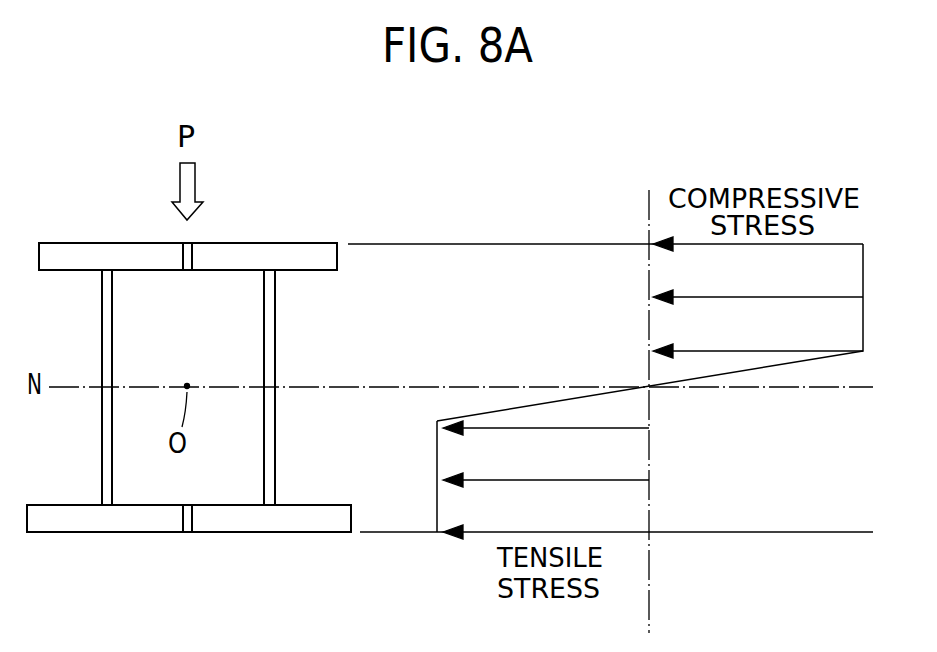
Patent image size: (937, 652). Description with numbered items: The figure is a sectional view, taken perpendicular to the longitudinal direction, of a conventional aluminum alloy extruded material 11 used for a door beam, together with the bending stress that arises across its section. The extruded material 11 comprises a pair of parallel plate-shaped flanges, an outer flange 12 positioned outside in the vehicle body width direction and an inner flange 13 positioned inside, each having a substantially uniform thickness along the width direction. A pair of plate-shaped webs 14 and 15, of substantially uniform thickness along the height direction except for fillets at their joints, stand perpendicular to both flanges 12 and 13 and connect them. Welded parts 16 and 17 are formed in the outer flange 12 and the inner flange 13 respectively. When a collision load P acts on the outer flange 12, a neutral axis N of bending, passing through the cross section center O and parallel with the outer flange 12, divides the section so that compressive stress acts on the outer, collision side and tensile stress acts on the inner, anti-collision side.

The aluminum alloy extruded material 11 is at (189, 350).
The outer flange 12 is at (128, 253).
The inner flange 13 is at (108, 533).
The web 14 is at (102, 333).
The web 15 is at (275, 333).
The welded part 16 is at (186, 271).
The welded part 17 is at (186, 533).